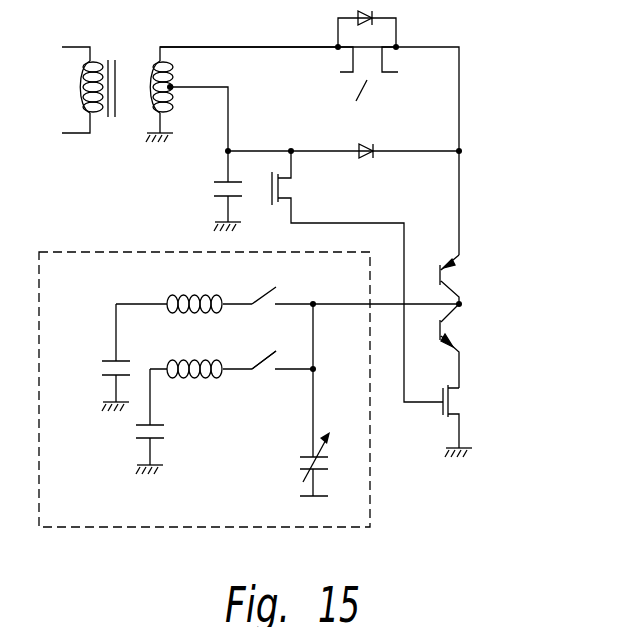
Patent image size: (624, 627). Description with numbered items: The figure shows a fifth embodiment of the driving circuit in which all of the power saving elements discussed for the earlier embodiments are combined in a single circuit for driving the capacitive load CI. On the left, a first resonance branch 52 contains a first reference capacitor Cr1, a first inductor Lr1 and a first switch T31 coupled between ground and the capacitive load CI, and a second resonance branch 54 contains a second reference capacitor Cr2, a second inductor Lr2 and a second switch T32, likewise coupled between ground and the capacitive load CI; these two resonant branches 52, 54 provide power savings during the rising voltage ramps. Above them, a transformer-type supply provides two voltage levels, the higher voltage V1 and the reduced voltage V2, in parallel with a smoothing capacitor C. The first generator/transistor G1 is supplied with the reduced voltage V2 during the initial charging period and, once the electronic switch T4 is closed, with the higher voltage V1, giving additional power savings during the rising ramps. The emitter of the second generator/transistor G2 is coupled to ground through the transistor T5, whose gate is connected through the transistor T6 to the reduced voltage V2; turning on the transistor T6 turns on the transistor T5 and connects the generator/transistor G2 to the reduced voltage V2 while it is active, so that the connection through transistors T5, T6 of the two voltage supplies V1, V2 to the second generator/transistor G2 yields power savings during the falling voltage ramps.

The first resonance branch 52 is at (164, 290).
The second resonance branch 54 is at (220, 393).
The higher voltage V1 is at (249, 28).
The reduced voltage V2 is at (197, 106).
The electronic switch T4 is at (375, 59).
The smoothing capacitor C is at (215, 191).
The transistor T6 is at (357, 276).
The first generator/transistor G1 is at (467, 279).
The second generator/transistor G2 is at (467, 346).
The transistor T5 is at (467, 421).
The first inductor Lr1 is at (184, 288).
The second inductor Lr2 is at (201, 349).
The first switch T31 is at (355, 283).
The second switch T32 is at (282, 379).
The first reference capacitor Cr1 is at (94, 357).
The second reference capacitor Cr2 is at (169, 421).
The capacitive load CI is at (299, 400).